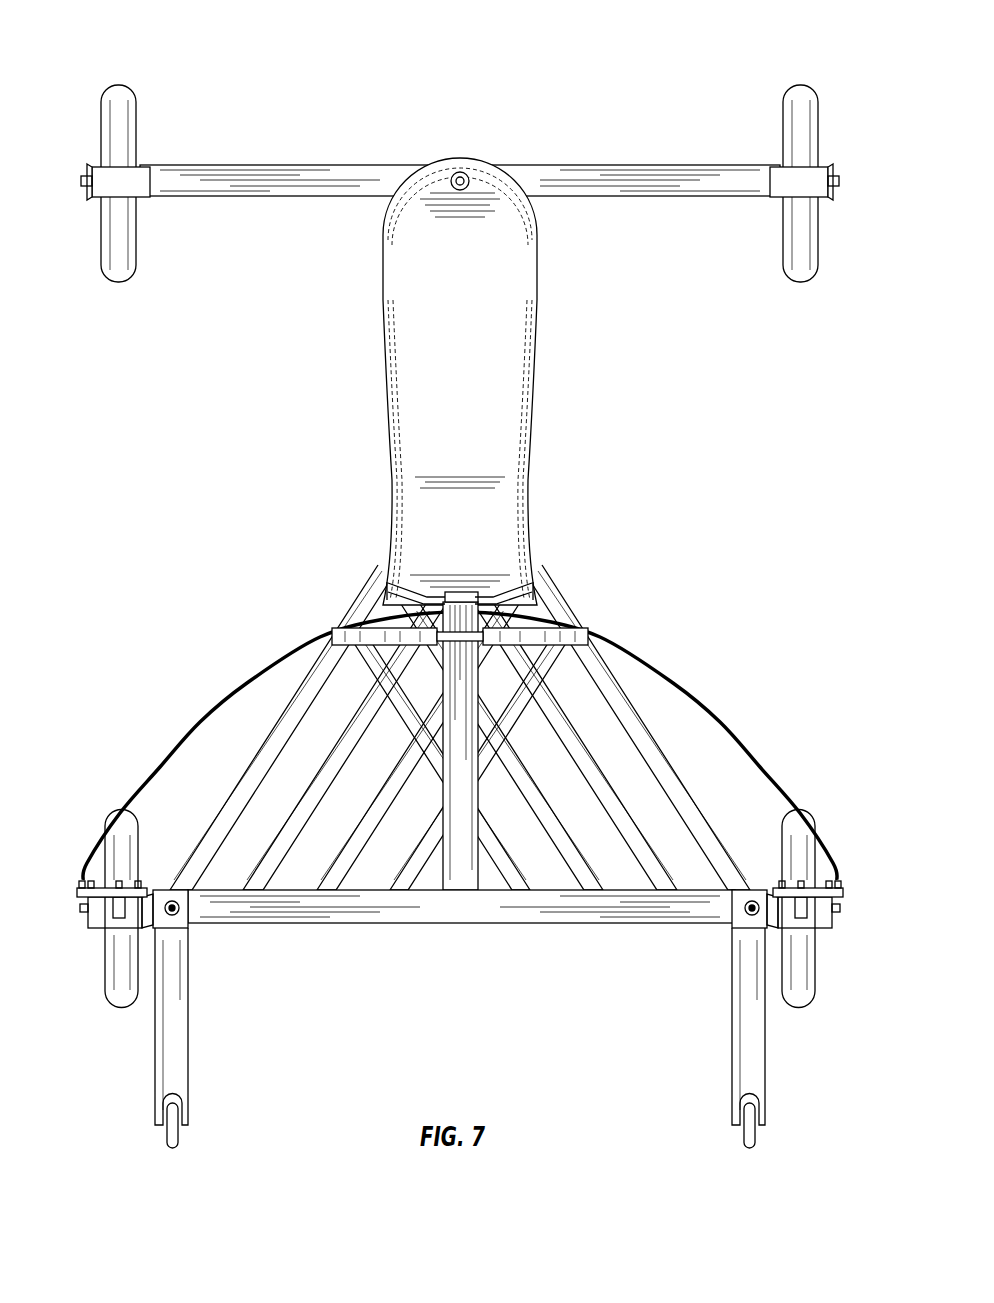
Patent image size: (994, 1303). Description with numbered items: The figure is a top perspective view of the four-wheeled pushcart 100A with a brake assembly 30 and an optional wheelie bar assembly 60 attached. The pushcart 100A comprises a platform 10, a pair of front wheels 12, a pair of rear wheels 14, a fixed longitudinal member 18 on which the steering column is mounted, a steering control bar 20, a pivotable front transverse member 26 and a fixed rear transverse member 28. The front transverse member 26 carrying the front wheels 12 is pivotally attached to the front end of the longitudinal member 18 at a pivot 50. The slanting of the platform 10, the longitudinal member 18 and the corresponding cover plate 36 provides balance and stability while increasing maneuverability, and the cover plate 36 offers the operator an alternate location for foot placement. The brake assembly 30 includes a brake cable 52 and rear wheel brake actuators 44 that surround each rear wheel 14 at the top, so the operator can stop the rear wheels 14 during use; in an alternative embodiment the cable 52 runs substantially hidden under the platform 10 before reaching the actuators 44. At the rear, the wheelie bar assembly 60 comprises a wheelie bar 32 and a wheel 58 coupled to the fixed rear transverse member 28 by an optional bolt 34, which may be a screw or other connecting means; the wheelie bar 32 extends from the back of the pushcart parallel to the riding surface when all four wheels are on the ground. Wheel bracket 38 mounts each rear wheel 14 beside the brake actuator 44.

The pushcart 100A is at (660, 75).
The platform 10 is at (422, 848).
The front wheels 12 is at (469, 171).
The rear wheels 14 is at (459, 918).
The longitudinal member 18 is at (402, 777).
The steering control bar 20 is at (488, 601).
The pivotable front transverse member 26 is at (460, 167).
The fixed rear transverse member 28 is at (461, 923).
The brake assembly 30 is at (402, 574).
The wheelie bar 32 is at (460, 1026).
The bolt 34 is at (460, 930).
The cover plate 36 is at (432, 381).
The wheel brackets 38 is at (466, 930).
The rear wheel brake actuators 44 is at (464, 875).
The pivot 50 is at (482, 155).
The brake cable 52 is at (460, 746).
The wheel 58 is at (459, 1141).
The wheelie bar assembly 60 is at (662, 1008).